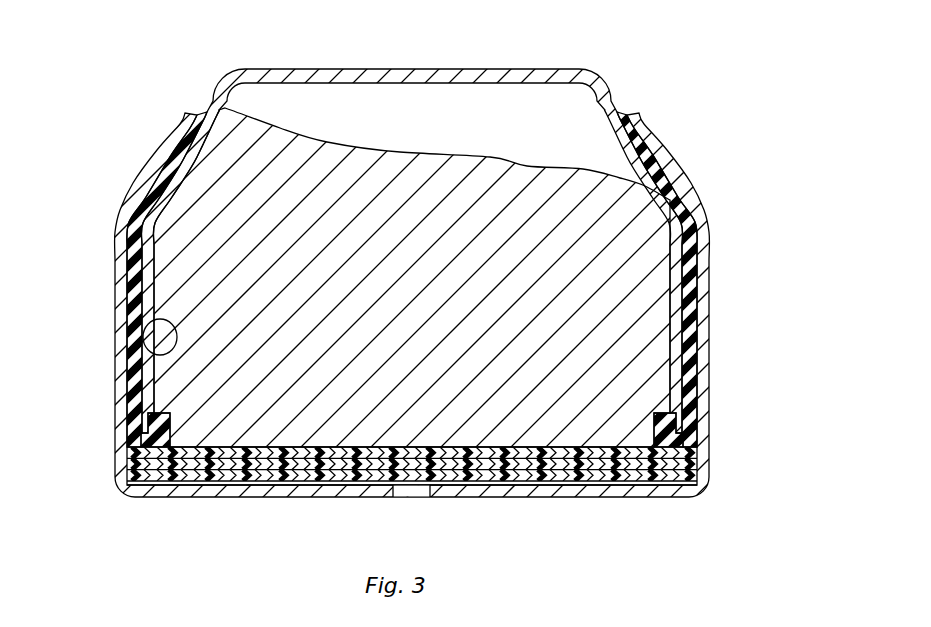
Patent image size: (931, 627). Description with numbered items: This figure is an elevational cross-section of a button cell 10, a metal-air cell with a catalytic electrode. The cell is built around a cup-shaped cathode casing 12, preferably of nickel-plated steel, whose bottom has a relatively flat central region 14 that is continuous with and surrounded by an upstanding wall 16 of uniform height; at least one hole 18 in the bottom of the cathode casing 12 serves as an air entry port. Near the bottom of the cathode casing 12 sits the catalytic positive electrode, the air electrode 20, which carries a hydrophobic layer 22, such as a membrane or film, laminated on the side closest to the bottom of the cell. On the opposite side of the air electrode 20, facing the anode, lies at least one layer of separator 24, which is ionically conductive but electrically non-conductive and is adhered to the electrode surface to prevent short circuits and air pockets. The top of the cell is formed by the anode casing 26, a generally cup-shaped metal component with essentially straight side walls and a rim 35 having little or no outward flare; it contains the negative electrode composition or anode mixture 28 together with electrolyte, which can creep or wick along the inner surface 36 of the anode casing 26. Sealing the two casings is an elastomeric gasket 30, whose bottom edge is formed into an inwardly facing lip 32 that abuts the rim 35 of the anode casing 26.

The button cell 10 is at (465, 287).
The cathode casing 12 is at (122, 258).
The flat central region 14 is at (305, 484).
The upstanding wall 16 is at (115, 315).
The hole 18 is at (410, 488).
The air electrode 20 is at (540, 473).
The hydrophobic layer 22 is at (625, 473).
The separator 24 is at (693, 452).
The anode casing 26 is at (423, 68).
The anode mixture 28 is at (463, 167).
The gasket 30 is at (695, 318).
The inwardly facing lip 32 is at (167, 412).
The rim 35 is at (675, 425).
The inner surface 36 is at (143, 352).